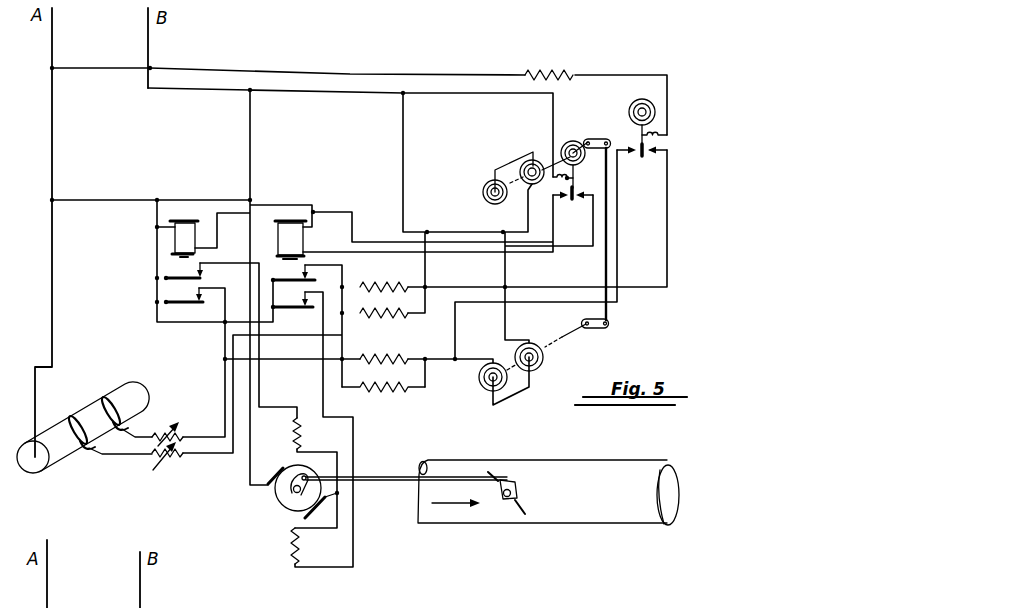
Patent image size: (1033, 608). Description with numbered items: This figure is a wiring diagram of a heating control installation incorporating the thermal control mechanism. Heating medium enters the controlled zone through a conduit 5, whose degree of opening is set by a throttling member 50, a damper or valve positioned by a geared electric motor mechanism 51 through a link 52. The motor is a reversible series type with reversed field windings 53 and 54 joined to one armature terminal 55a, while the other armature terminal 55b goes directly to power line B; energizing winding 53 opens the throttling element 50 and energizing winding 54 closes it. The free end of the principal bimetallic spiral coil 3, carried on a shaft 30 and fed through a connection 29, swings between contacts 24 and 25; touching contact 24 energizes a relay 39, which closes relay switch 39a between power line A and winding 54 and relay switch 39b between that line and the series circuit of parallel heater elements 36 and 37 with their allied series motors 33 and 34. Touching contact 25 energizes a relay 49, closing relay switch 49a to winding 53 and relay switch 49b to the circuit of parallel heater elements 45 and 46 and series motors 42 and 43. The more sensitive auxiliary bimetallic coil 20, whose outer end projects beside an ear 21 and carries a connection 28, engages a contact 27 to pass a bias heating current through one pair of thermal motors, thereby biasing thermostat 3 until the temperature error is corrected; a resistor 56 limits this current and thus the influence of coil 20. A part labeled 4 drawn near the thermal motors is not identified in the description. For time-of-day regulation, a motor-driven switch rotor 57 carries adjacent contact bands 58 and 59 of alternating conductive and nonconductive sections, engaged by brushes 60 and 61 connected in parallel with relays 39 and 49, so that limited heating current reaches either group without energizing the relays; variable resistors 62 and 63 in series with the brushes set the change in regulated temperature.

The resistor 56 is at (558, 71).
The auxiliary bimetallic thermal sensitive spiral coil 20 is at (656, 109).
The connection 28 is at (661, 140).
The contact 27 is at (650, 156).
The ear 21 is at (629, 160).
The series motor 34 is at (533, 152).
The series motor 33 is at (487, 186).
The principal bimetallic thermal sensitive spiral coil 3 is at (575, 141).
The shaft 30 is at (556, 158).
The connection 29 is at (580, 175).
The switch contact 24 is at (560, 199).
The contact 25 is at (586, 201).
The relay 49 is at (178, 240).
The relay switch 49a is at (164, 276).
The relay switch 49b is at (164, 300).
The relay 39 is at (294, 238).
The relay switch 39b is at (291, 271).
The relay switch 39a is at (300, 301).
The heater element 36 is at (398, 282).
The heater element 37 is at (390, 318).
The heater element 45 is at (364, 356).
The heater element 46 is at (383, 391).
The lever arm 4 is at (582, 330).
The series motor 43 is at (546, 364).
The series motor 42 is at (489, 387).
The motor-driven switch rotor 57 is at (40, 468).
The switch contact band 58 is at (64, 424).
The switch contact band 59 is at (102, 398).
The contact brush 60 is at (83, 449).
The contact brush 61 is at (126, 419).
The variable resistor 62 is at (172, 461).
The variable resistor 63 is at (182, 430).
The field winding 53 is at (303, 436).
The field winding 54 is at (303, 548).
The geared electric motor mechanism 51 is at (287, 503).
The armature terminal 55b is at (275, 477).
The armature terminal 55a is at (330, 502).
The link 52 is at (384, 477).
The conduit 5 is at (613, 466).
The throttling member 50 is at (512, 520).